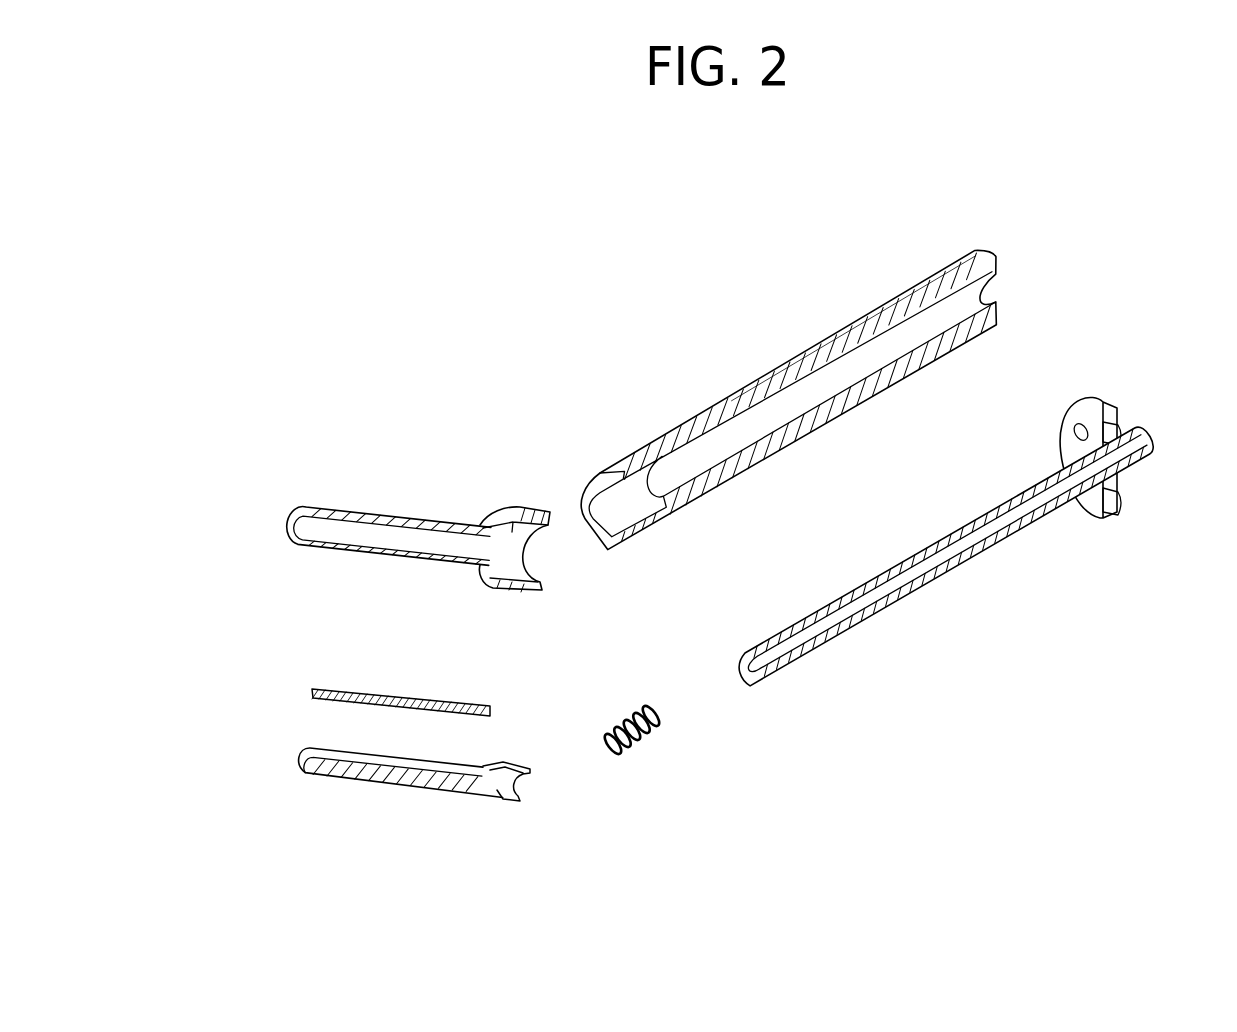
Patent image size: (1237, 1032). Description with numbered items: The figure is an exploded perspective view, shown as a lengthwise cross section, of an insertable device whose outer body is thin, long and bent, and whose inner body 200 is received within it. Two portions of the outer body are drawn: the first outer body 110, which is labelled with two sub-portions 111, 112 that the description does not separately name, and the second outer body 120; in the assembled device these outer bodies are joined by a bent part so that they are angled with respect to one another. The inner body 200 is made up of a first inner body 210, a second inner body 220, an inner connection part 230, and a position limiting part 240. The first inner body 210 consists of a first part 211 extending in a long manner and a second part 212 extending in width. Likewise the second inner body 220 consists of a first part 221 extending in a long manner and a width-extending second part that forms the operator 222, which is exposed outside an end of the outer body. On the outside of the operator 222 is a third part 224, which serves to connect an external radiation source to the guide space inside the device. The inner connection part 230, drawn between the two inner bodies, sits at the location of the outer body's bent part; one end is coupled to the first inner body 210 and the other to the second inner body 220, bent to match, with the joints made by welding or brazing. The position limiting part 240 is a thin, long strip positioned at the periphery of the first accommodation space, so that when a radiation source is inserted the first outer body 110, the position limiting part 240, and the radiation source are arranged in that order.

The first outer body 110 is at (425, 495).
The first tube body 111 is at (443, 517).
The first tube head 112 is at (517, 514).
The second outer body 120 is at (686, 432).
The inner body 200 is at (268, 814).
The first inner body 210 is at (423, 830).
The first part 211 is at (435, 792).
The second part 212 is at (508, 815).
The second inner body 220 is at (970, 542).
The first part 221 is at (945, 556).
The operator 222 is at (1113, 513).
The third part 224 is at (1138, 472).
The inner connection part 230 is at (625, 710).
The position limiting part 240 is at (390, 690).